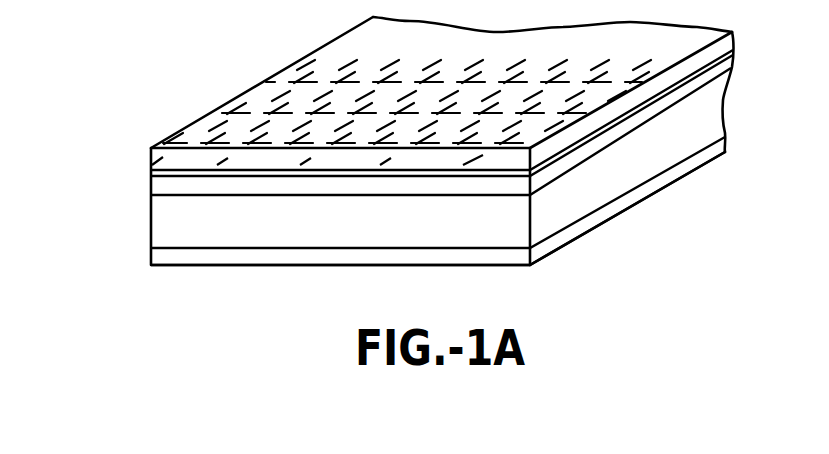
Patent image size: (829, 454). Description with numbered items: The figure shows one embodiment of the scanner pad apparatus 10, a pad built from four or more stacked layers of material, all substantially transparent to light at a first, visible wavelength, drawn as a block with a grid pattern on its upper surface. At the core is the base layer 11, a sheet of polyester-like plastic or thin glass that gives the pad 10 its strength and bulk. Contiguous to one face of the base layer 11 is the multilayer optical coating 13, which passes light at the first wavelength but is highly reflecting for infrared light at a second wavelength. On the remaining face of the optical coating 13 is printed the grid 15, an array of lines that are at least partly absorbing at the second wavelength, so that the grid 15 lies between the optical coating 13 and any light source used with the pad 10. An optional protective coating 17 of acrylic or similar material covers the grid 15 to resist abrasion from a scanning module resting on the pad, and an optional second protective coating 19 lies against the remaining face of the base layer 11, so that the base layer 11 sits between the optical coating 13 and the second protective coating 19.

The scanner pad apparatus 10 is at (170, 86).
The base layer 11 is at (167, 225).
The multilayer optical coating 13 is at (158, 187).
The grid 15 is at (153, 171).
The protective coating 17 is at (152, 160).
The second protective coating 19 is at (160, 255).